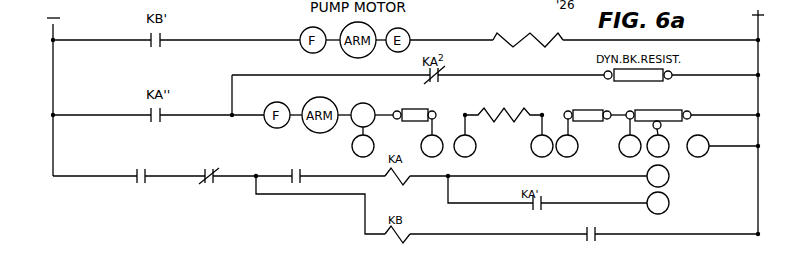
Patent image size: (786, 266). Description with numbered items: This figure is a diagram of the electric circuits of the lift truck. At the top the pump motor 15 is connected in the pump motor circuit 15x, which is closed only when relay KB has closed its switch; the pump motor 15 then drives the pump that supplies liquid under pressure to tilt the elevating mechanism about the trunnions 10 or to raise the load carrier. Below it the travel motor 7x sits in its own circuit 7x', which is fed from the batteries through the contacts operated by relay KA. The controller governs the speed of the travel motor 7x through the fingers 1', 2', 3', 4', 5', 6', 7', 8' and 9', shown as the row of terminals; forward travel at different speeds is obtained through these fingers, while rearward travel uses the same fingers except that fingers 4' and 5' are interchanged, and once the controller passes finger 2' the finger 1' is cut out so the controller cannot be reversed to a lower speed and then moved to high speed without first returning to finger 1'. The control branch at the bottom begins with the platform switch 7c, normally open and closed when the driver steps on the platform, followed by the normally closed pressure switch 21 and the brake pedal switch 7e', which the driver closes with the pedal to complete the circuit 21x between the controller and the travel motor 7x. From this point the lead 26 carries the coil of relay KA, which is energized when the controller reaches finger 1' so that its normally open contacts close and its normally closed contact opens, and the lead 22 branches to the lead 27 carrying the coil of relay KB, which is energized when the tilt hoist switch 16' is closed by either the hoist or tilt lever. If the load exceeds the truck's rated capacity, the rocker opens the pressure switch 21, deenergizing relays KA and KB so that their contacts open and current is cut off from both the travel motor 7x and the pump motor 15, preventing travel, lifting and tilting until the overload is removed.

The pump motor 15 is at (392, 70).
The pump motor circuit 15x is at (511, 32).
The travel motor 7x is at (355, 108).
The travel motor circuit 7x' is at (501, 107).
The controller finger 3' is at (363, 142).
The trunnions 10 is at (432, 138).
The controller finger 4' is at (465, 136).
The controller finger 5' is at (542, 136).
The controller finger 6' is at (567, 138).
The controller finger 7' is at (630, 138).
The controller finger 8' is at (658, 143).
The controller finger 9' is at (722, 146).
The controller finger 1' is at (658, 176).
The controller finger 2' is at (658, 203).
The lead 26 is at (508, 176).
The platform switch 7c is at (136, 183).
The pressure switch 21 is at (205, 168).
The brake pedal switch 7e' is at (289, 183).
The lead 22 is at (351, 232).
The controller circuit 21x is at (472, 191).
The lead 27 is at (485, 234).
The tilt hoist switch 16' is at (585, 213).